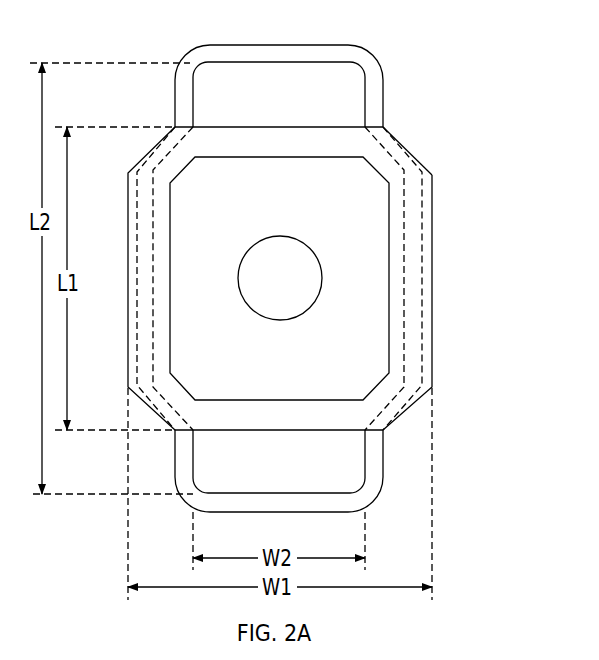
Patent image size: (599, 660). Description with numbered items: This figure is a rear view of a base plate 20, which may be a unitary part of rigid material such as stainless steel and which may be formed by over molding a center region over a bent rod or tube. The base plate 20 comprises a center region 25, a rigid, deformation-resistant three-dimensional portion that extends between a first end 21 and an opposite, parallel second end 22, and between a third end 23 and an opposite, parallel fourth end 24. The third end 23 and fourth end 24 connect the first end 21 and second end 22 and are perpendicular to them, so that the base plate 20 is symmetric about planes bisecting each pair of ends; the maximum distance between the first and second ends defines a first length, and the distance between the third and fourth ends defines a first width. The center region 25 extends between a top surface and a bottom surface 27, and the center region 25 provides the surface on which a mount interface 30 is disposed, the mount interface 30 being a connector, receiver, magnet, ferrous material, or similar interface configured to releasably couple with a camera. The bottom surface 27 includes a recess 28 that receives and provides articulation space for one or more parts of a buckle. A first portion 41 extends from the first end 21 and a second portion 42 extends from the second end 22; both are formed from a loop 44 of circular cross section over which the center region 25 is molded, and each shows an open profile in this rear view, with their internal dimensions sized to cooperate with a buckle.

The base plate 20 is at (480, 83).
The first end 21 is at (312, 118).
The second end 22 is at (248, 440).
The third end 23 is at (120, 197).
The fourth end 24 is at (441, 352).
The center region 25 is at (408, 148).
The bottom surface 27 is at (272, 151).
The recess 28 is at (272, 209).
The mount interface 30 is at (313, 287).
The first portion 41 is at (248, 36).
The second portion 42 is at (261, 522).
The loop 44 is at (384, 92).